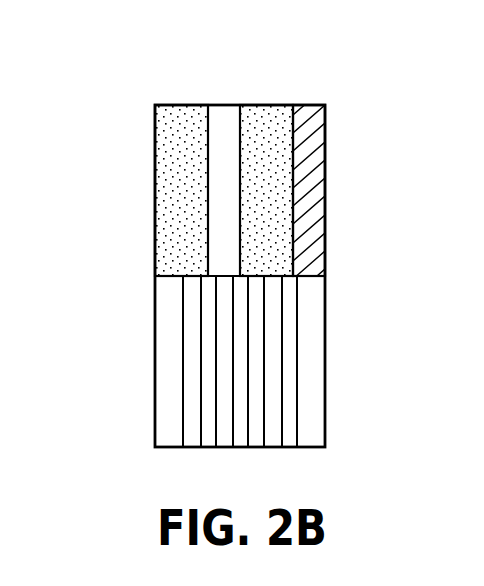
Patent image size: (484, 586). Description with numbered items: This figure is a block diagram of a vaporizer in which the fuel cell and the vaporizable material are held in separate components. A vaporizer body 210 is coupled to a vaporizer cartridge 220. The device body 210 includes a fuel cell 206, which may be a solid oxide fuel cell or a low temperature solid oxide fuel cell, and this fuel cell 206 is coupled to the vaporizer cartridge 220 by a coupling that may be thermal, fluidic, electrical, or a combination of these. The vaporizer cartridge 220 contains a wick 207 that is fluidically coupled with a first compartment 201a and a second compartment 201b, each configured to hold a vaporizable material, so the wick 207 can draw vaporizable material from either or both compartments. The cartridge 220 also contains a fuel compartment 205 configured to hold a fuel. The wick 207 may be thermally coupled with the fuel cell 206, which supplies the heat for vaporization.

The first compartment 201a is at (175, 188).
The second compartment 201b is at (270, 112).
The fuel compartment 205 is at (323, 202).
The fuel cell 206 is at (319, 368).
The wick 207 is at (228, 105).
The vaporizer body 210 is at (132, 282).
The vaporizer cartridge 220 is at (92, 105).